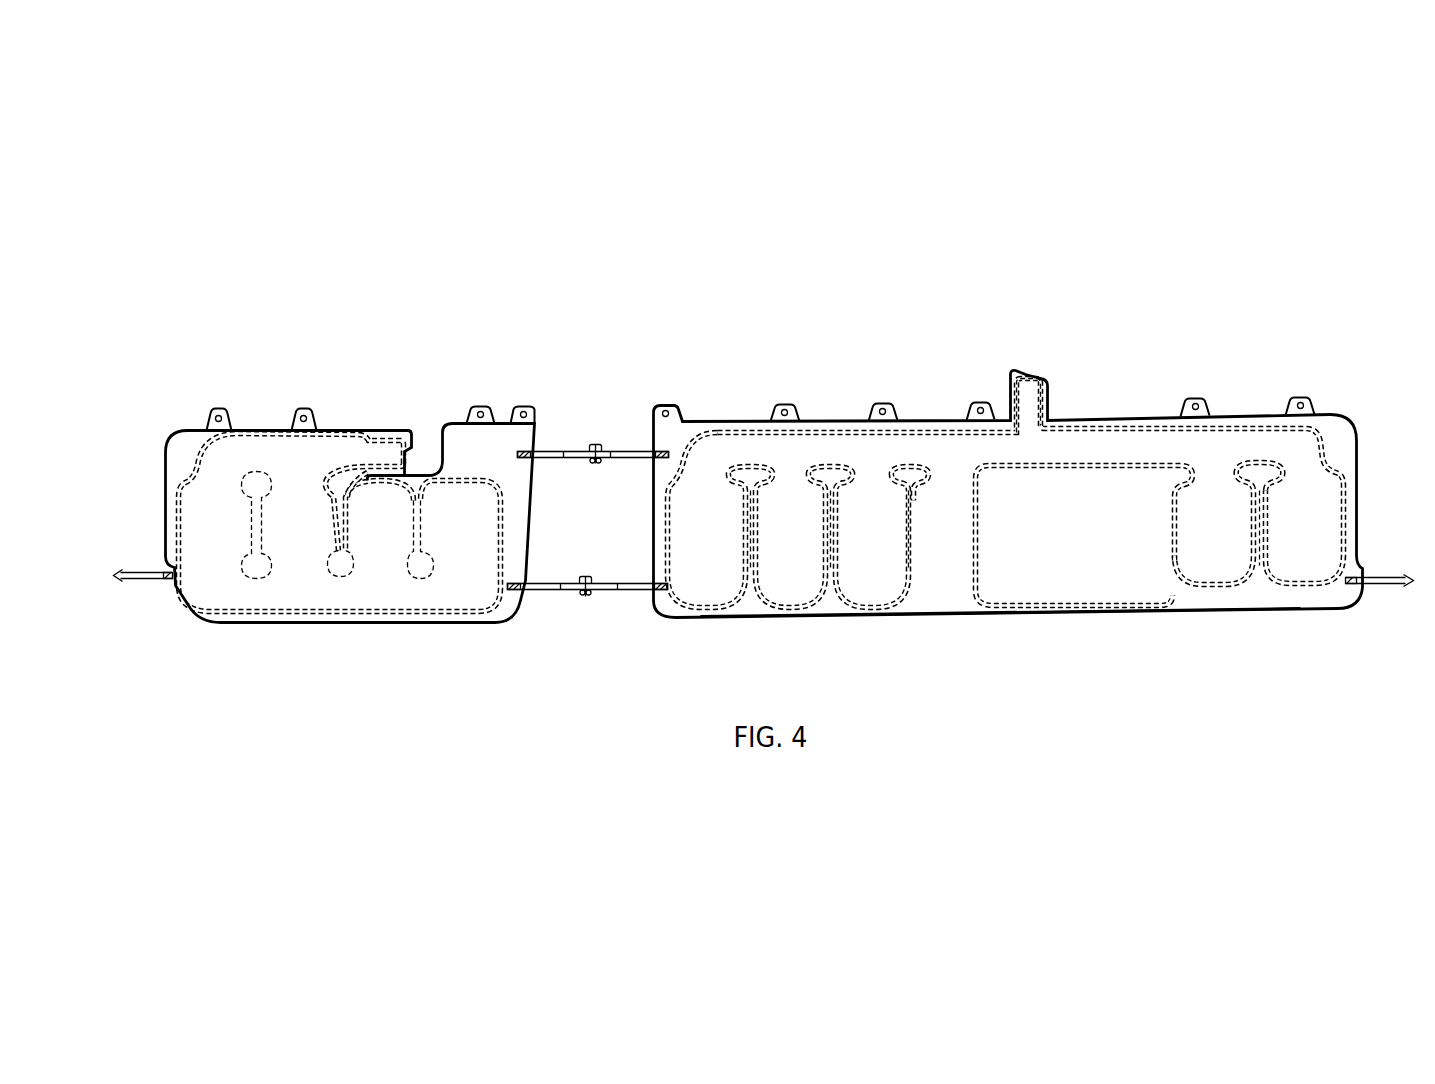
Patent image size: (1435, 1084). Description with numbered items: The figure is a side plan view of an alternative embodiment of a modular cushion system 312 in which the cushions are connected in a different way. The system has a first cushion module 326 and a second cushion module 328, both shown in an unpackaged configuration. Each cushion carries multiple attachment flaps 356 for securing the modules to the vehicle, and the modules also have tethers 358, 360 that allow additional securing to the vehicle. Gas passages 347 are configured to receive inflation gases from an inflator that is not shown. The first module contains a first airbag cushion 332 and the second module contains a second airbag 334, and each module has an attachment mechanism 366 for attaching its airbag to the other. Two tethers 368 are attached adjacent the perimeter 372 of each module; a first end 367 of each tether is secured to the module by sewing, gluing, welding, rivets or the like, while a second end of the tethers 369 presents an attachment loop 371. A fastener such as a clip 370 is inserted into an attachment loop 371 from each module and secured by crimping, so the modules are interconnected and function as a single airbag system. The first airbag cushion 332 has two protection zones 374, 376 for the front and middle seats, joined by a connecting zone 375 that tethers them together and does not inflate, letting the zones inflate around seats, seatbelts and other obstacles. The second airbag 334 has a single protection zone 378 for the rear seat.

The modular cushion system 312 is at (640, 331).
The first cushion module 326 is at (1140, 357).
The second cushion module 328 is at (399, 385).
The first airbag cushion 332 is at (1099, 590).
The second airbag 334 is at (337, 600).
The gas passage 347 is at (384, 450).
The attachment flaps 356 is at (219, 405).
The tether 358 is at (1378, 584).
The tether 360 is at (124, 578).
The attachment mechanism 366 is at (582, 650).
The first end of the tethers 367 is at (518, 454).
The tethers 368 is at (542, 448).
The second end of the tethers 369 is at (589, 450).
The clip 370 is at (596, 446).
The attachment loop 371 is at (574, 460).
The perimeter 372 is at (156, 438).
The first protection zone 374 is at (1247, 538).
The connecting zone 375 is at (1059, 538).
The second protection zone 376 is at (815, 541).
The protection zone 378 is at (327, 548).